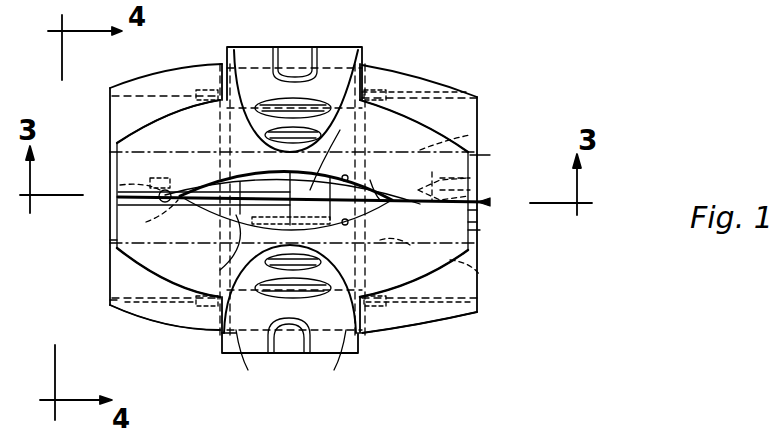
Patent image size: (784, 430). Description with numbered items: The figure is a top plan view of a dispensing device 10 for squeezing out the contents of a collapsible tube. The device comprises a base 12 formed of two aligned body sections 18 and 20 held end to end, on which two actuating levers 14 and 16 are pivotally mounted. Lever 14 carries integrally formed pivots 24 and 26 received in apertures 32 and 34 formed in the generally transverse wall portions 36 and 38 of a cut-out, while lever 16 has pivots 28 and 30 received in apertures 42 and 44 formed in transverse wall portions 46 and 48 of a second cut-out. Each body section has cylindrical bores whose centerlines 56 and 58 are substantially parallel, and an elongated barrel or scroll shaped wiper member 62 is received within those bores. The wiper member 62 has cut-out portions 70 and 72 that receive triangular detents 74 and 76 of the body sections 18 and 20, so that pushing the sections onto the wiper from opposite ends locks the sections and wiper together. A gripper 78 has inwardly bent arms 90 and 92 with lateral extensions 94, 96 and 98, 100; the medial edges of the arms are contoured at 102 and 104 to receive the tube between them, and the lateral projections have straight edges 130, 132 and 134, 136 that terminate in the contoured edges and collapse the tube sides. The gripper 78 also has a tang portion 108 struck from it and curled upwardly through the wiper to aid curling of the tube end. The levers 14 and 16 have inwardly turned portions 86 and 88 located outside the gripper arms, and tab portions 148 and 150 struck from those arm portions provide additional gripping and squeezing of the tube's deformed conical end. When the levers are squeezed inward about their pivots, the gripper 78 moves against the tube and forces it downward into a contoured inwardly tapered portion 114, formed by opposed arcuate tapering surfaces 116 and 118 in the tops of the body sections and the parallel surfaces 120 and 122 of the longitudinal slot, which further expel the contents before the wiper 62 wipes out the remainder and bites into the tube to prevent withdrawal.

The dispensing device 10 is at (505, 94).
The base 12 is at (107, 300).
The actuating lever 14 is at (370, 47).
The actuating lever 16 is at (232, 350).
The body section 18 is at (128, 315).
The body section 20 is at (440, 330).
The pivot 24 is at (208, 90).
The pivot 26 is at (384, 90).
The pivot 28 is at (204, 308).
The pivot 30 is at (372, 308).
The aperture 32 is at (195, 92).
The aperture 34 is at (395, 92).
The transverse wall portion 36 is at (222, 80).
The transverse wall portion 38 is at (360, 62).
The aperture 42 is at (185, 302).
The aperture 44 is at (392, 308).
The transverse wall portion 46 is at (242, 350).
The transverse wall portion 48 is at (345, 350).
The centerline 56 is at (470, 140).
The centerline 58 is at (495, 280).
The wiper member 62 is at (490, 205).
The cut-out portion 70 is at (155, 180).
The cut-out portion 72 is at (470, 192).
The detent 74 is at (120, 185).
The detent 76 is at (470, 177).
The gripper 78 is at (128, 258).
The inwardly turned portion 86 is at (250, 125).
The inwardly turned portion 88 is at (345, 282).
The inwardly bent arm 90 is at (455, 130).
The inwardly bent arm 92 is at (460, 315).
The lateral extension 94 is at (150, 128).
The lateral extension 96 is at (470, 160).
The lateral extension 98 is at (112, 240).
The lateral extension 100 is at (480, 232).
The contoured edge 102 is at (347, 178).
The contoured edge 104 is at (348, 222).
The tang portion 108 is at (370, 250).
The inwardly tapered portion 114 is at (270, 210).
The arcuate tapering surface 116 is at (312, 188).
The arcuate tapering surface 118 is at (230, 245).
The parallel surface 120 is at (225, 210).
The parallel surface 122 is at (380, 200).
The straight edge 130 is at (118, 205).
The straight edge 132 is at (480, 222).
The straight edge 134 is at (168, 200).
The straight edge 136 is at (420, 195).
The tab portion 148 is at (318, 62).
The tab portion 150 is at (305, 355).